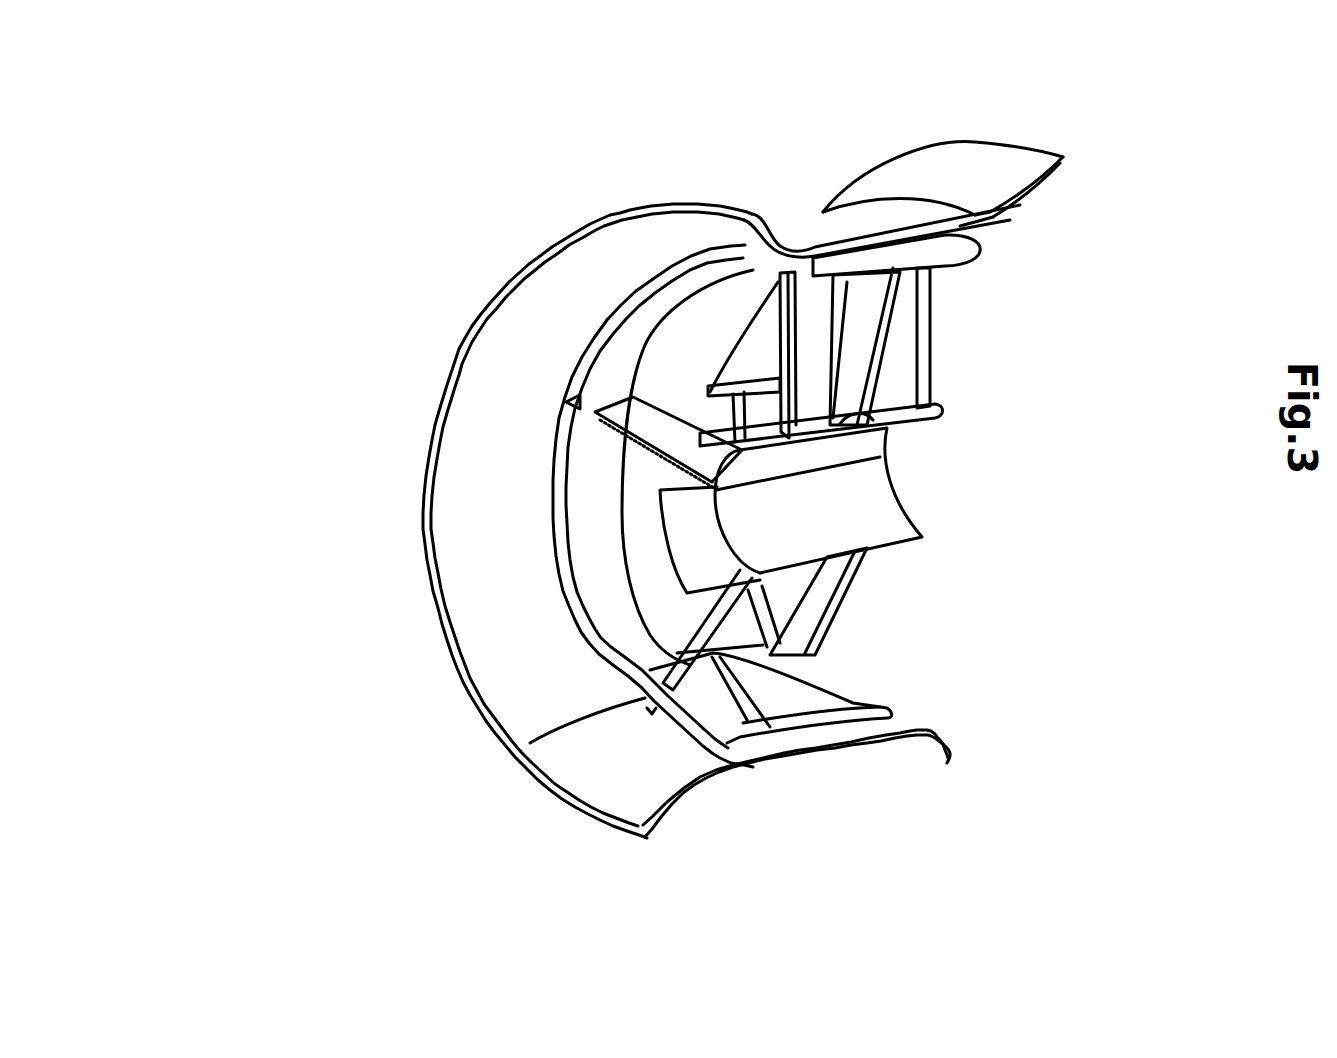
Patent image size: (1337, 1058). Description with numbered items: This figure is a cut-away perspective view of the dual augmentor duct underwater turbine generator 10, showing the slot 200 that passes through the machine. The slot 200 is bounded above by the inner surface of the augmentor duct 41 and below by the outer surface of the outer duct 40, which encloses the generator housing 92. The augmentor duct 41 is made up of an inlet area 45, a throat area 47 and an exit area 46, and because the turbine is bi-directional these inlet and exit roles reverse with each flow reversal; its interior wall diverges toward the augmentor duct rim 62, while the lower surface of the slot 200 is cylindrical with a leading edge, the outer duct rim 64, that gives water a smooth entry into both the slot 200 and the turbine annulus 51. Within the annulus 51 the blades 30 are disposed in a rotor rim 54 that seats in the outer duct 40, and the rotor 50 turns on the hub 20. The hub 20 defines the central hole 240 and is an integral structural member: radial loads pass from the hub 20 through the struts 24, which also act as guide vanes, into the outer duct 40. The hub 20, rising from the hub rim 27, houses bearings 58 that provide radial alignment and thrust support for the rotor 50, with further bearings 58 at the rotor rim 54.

The dual augmentor duct underwater turbine generator 10 is at (325, 465).
The hub 20 is at (750, 518).
The struts 24 is at (715, 657).
The hub rim 27 is at (660, 515).
The blades 30 is at (832, 578).
The outer duct 40 is at (975, 235).
The augmentor duct 41 is at (968, 140).
The inlet area 45 is at (540, 272).
The exit area 46 is at (1010, 178).
The throat area 47 is at (807, 213).
The turbine rotor 50 is at (878, 628).
The annulus 51 is at (972, 326).
The rotor rim 54 is at (833, 690).
The bearings 58 is at (940, 414).
The augmentor duct rim 62 is at (497, 750).
The outer duct rim 64 is at (565, 573).
The generator housing 92 is at (872, 748).
The slot 200 is at (1017, 217).
The central hole 240 is at (840, 503).